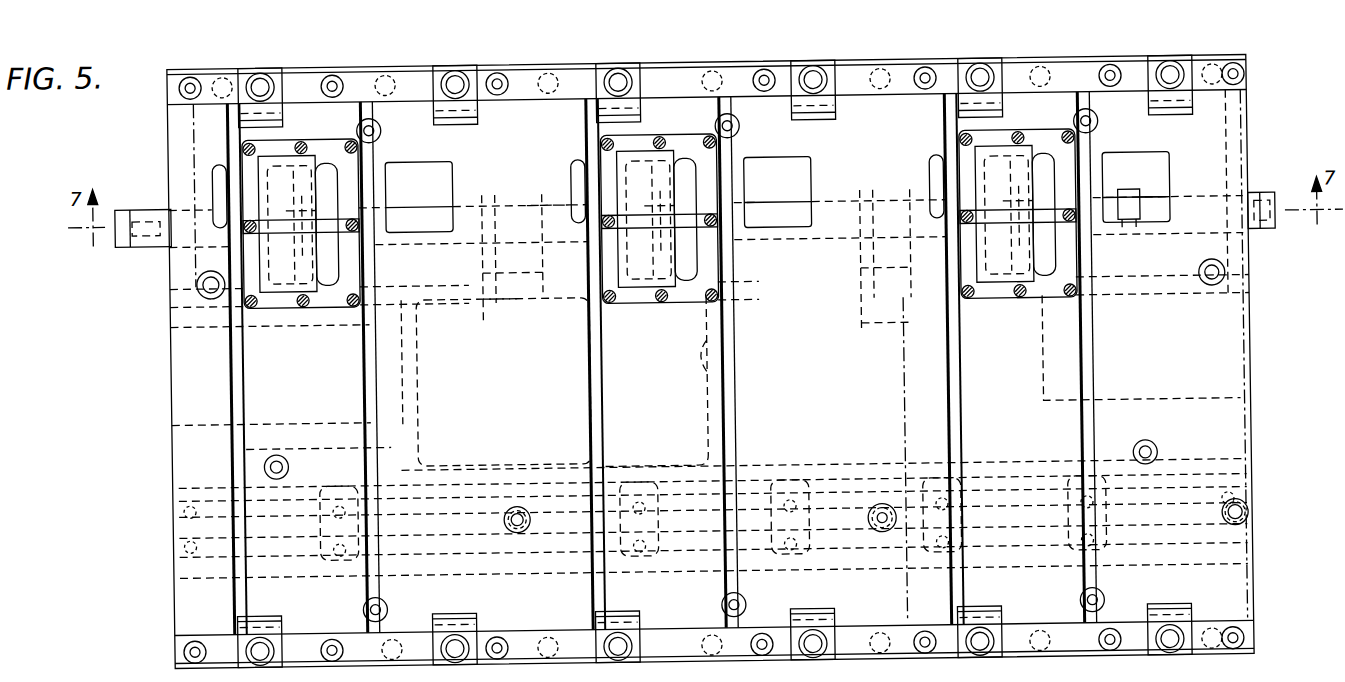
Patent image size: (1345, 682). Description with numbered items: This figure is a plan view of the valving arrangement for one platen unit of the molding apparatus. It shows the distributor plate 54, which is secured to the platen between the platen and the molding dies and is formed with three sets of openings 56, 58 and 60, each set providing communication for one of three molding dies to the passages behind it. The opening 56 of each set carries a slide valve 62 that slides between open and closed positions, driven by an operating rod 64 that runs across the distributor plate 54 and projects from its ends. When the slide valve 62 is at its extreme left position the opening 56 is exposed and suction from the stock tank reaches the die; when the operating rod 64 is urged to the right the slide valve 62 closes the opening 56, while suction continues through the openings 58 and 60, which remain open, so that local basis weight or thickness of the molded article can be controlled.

The distributor plate 54 is at (171, 460).
The opening 56 is at (327, 166).
The opening 58 is at (214, 197).
The opening 60 is at (428, 171).
The slide valve 62 is at (290, 270).
The operating rod 64 is at (161, 236).